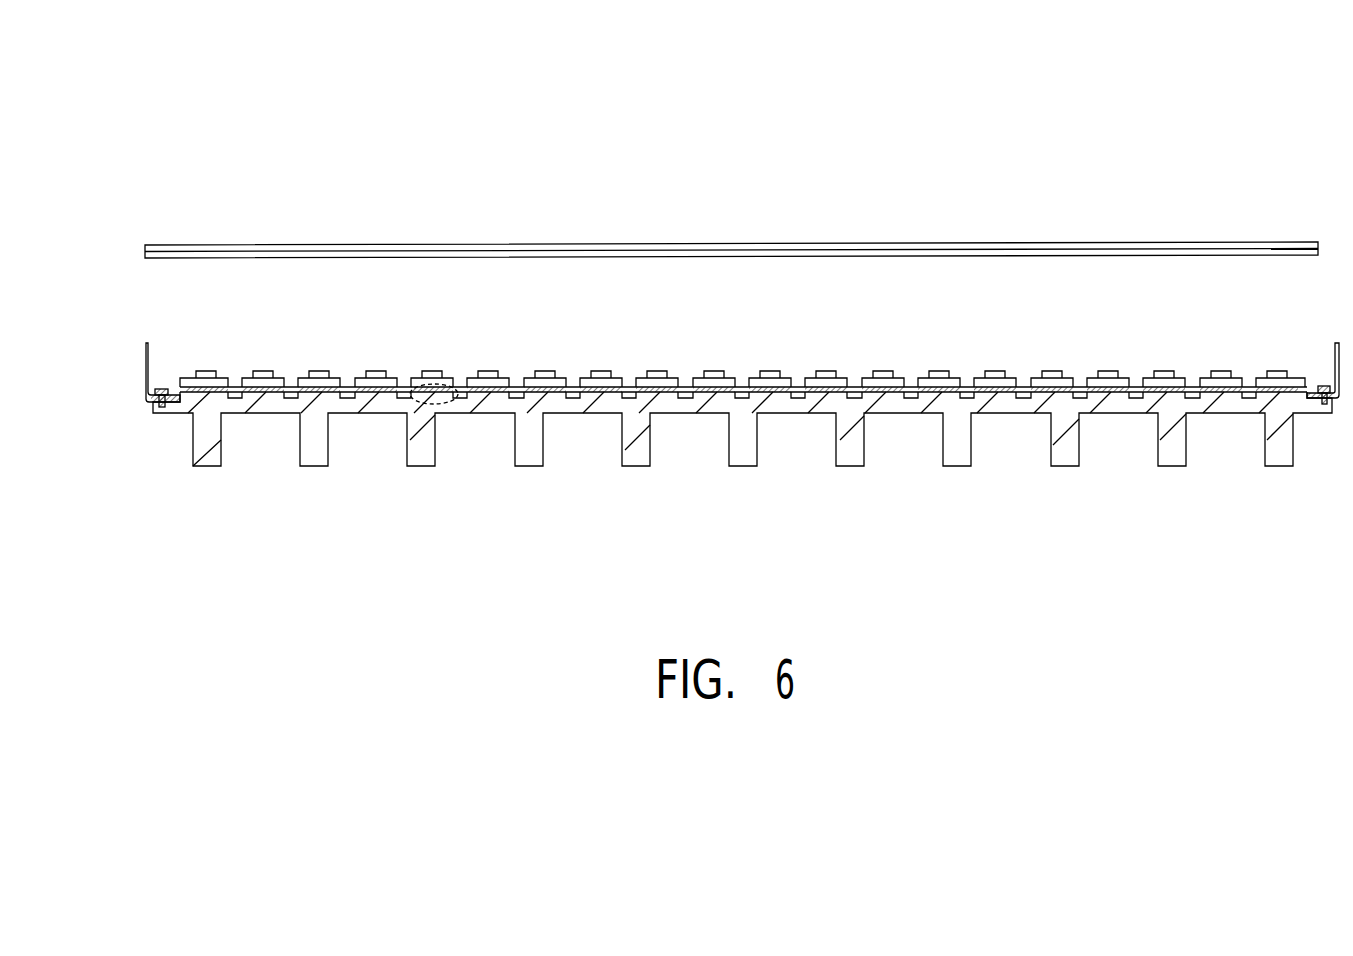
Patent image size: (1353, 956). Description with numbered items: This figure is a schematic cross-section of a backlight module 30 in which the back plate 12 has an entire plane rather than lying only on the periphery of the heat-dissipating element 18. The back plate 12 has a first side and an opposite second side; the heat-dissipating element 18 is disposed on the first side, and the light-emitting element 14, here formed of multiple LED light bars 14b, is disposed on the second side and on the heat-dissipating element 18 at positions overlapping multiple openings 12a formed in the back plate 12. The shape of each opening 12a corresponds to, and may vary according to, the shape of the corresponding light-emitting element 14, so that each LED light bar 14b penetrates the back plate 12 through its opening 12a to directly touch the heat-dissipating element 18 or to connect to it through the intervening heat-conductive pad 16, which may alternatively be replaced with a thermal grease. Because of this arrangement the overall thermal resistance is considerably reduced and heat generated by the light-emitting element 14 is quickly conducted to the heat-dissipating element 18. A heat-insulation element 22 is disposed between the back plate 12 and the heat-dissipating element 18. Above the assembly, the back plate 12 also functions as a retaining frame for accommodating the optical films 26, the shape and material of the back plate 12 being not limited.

The backlight module 30 is at (340, 97).
The optical films 26 is at (960, 243).
The light-emitting element 14 is at (742, 423).
The LED light bar 14b is at (742, 477).
The heat-dissipating element 18 is at (348, 407).
The heat-conductive pad 16 is at (362, 386).
The back plate 12 is at (147, 343).
The opening 12a is at (404, 390).
The heat-insulation element 22 is at (147, 400).